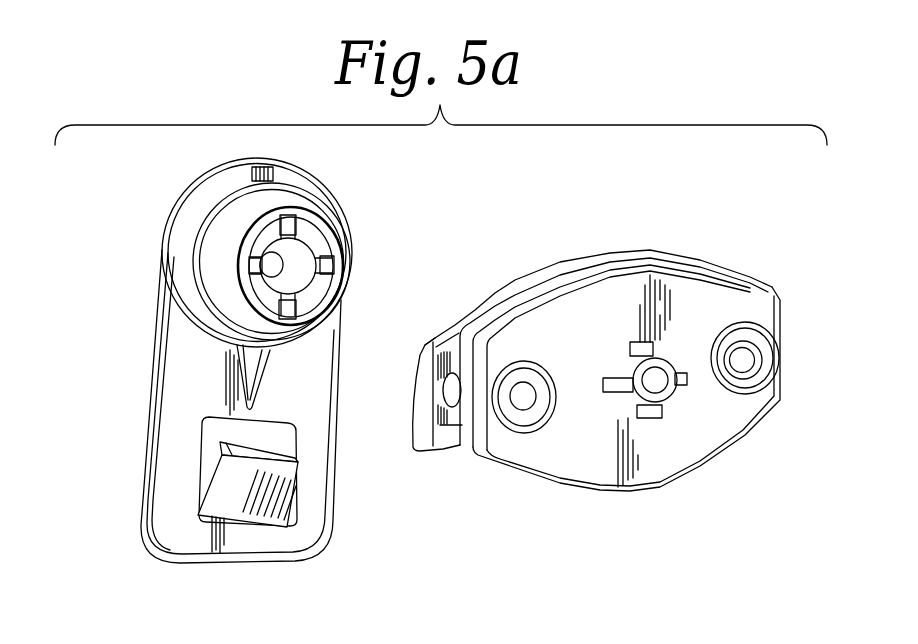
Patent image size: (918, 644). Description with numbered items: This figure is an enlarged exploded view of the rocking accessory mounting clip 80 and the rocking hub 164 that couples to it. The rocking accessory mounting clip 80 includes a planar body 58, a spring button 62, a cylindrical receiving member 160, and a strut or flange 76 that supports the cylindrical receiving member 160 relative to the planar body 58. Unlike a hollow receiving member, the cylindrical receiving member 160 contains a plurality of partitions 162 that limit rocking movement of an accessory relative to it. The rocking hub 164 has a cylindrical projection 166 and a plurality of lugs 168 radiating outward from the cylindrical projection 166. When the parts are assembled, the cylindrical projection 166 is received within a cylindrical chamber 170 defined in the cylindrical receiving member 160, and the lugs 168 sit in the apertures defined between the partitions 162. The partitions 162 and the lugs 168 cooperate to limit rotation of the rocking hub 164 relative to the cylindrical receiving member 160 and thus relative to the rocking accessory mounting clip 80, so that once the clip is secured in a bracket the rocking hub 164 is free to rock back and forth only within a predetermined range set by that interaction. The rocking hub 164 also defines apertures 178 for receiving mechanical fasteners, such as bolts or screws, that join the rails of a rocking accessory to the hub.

The planar body 58 is at (162, 500).
The spring button 62 is at (226, 502).
The strut or flange 76 is at (257, 358).
The rocking accessory mounting clip 80 is at (145, 416).
The cylindrical receiving member 160 is at (220, 238).
The partitions 162 is at (262, 212).
The rocking hub 164 is at (627, 245).
The cylindrical projection 166 is at (667, 360).
The lugs 168 is at (633, 343).
The cylindrical chamber 170 is at (287, 283).
The apertures 178 is at (742, 362).